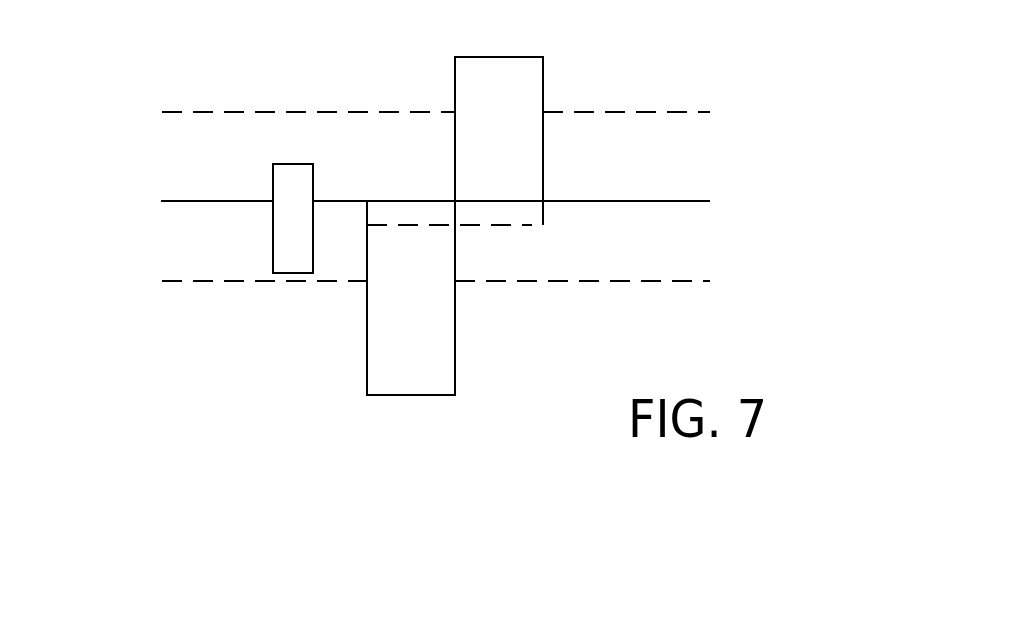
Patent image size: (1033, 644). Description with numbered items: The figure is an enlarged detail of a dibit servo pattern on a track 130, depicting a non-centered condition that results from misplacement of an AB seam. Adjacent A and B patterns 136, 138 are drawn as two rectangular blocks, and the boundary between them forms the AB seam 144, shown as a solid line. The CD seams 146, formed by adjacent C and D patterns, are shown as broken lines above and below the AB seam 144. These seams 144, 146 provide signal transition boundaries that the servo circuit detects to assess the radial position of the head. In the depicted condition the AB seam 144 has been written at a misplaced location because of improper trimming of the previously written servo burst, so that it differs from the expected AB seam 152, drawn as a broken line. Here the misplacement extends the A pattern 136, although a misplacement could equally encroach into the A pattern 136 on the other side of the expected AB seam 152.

The track 130 is at (151, 258).
The A pattern 136 is at (434, 397).
The B pattern 138 is at (522, 57).
The AB seam 144 is at (652, 200).
The CD seam 146 is at (640, 111).
The expected AB seam 152 is at (522, 228).